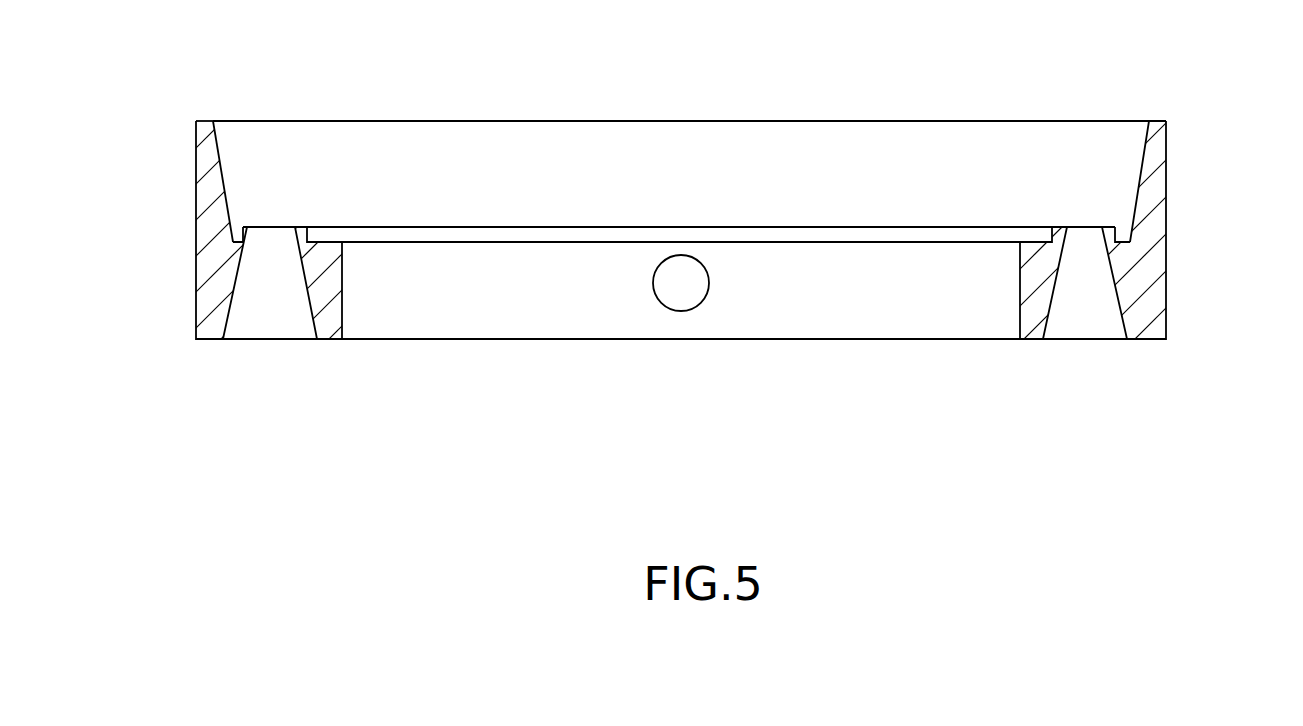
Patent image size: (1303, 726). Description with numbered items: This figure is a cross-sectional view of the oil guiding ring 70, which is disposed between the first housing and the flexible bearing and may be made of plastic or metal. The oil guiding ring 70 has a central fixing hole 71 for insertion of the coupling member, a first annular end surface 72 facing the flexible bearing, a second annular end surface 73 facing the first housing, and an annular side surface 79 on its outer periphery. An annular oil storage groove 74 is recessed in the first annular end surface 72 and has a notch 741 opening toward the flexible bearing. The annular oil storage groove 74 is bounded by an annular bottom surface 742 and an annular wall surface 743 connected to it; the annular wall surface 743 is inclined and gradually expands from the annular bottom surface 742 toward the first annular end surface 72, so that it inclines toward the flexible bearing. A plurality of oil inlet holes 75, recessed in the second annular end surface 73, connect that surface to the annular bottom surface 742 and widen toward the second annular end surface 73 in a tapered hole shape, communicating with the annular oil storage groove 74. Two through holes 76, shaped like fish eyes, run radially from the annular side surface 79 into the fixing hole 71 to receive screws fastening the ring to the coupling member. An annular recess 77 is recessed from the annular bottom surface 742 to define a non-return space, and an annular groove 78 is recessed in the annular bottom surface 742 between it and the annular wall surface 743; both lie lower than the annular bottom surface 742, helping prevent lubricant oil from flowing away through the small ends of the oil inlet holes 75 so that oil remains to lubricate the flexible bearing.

The oil guiding ring 70 is at (1182, 167).
The fixing hole 71 is at (1020, 313).
The first annular end surface 72 is at (202, 121).
The second annular end surface 73 is at (213, 340).
The annular oil storage groove 74 is at (1037, 157).
The notch 741 is at (1110, 121).
The annular bottom surface 742 is at (257, 226).
The annular wall surface 743 is at (222, 172).
The oil inlet holes 75 is at (277, 310).
The through holes 76 is at (680, 283).
The annular recess 77 is at (327, 227).
The annular groove 78 is at (235, 234).
The annular side surface 79 is at (1167, 285).